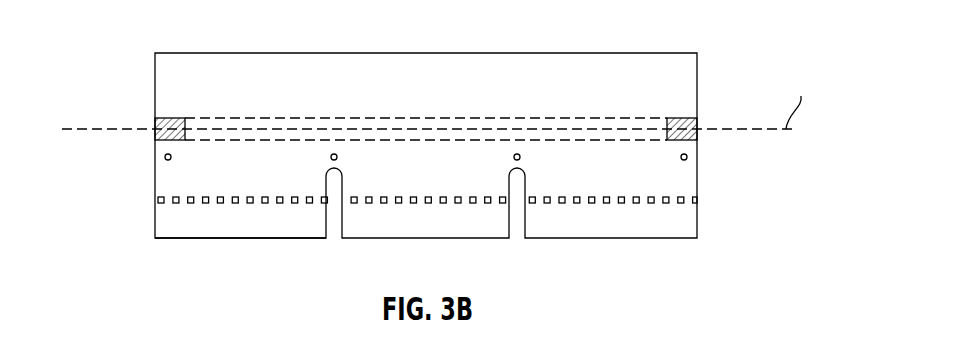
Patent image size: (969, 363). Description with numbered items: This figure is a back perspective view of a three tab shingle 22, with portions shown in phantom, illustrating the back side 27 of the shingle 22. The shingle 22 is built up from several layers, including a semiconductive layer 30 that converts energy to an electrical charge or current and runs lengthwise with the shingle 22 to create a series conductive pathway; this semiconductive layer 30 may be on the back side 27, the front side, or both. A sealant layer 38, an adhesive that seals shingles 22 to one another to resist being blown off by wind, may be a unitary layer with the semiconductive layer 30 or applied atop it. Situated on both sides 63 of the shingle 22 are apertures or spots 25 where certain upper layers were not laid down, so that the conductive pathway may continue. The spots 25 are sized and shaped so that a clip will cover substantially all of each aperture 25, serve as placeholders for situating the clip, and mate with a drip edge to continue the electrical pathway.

The shingle 22 is at (107, 49).
The semiconductive layer 30 is at (155, 60).
The apertures or spots 25 is at (155, 118).
The sides of the shingle 63 is at (155, 173).
The sealant layer 38 is at (159, 198).
The back side 27 is at (195, 227).